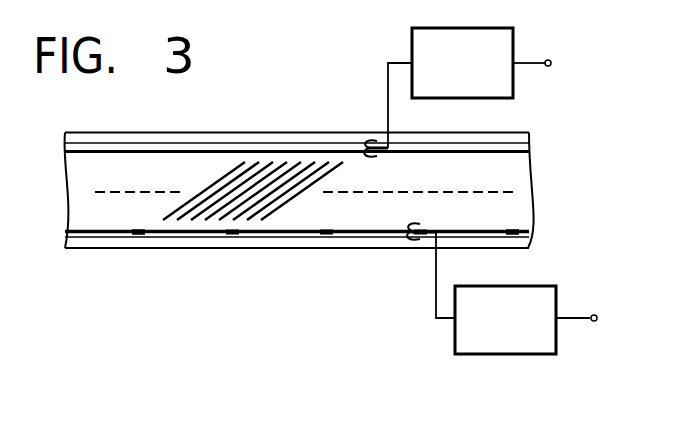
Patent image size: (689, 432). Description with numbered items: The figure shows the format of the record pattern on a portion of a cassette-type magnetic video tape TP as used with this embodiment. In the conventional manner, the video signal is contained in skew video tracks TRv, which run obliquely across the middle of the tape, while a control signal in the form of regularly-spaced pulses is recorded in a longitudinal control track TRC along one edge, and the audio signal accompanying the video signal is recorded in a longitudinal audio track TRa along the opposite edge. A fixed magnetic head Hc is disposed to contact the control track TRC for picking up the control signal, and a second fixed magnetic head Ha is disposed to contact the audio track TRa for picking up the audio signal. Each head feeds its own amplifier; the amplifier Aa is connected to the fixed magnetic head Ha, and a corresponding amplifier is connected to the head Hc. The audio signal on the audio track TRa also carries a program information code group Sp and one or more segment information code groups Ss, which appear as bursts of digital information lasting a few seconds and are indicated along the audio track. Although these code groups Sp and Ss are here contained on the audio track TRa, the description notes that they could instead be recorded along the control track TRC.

The magnetic video tape TP is at (517, 177).
The control track TRC is at (152, 152).
The audio track TRa is at (179, 232).
The video tracks TRv is at (295, 200).
The program information code group Sp is at (140, 233).
The segment information code group Ss is at (325, 295).
The fixed magnetic head Hc is at (362, 142).
The fixed magnetic head Ha is at (409, 244).
The amplifier Aa is at (514, 354).